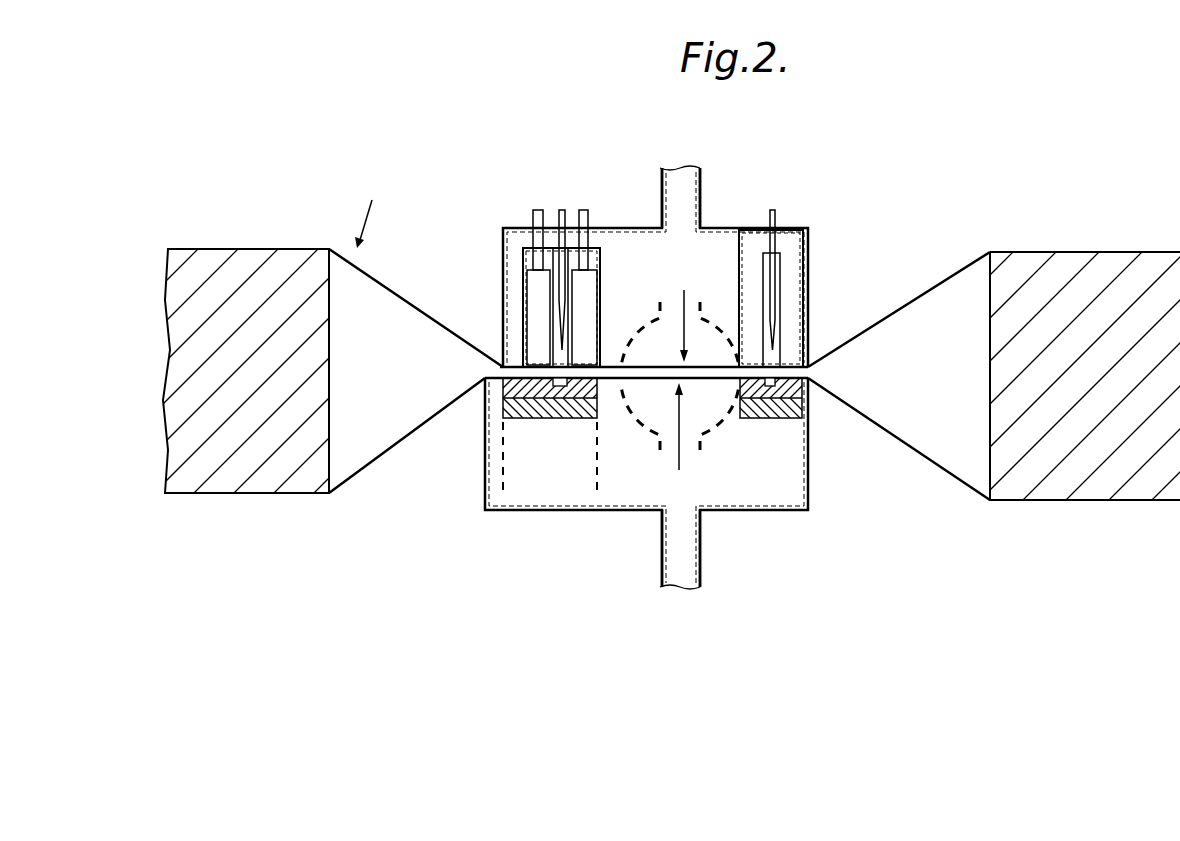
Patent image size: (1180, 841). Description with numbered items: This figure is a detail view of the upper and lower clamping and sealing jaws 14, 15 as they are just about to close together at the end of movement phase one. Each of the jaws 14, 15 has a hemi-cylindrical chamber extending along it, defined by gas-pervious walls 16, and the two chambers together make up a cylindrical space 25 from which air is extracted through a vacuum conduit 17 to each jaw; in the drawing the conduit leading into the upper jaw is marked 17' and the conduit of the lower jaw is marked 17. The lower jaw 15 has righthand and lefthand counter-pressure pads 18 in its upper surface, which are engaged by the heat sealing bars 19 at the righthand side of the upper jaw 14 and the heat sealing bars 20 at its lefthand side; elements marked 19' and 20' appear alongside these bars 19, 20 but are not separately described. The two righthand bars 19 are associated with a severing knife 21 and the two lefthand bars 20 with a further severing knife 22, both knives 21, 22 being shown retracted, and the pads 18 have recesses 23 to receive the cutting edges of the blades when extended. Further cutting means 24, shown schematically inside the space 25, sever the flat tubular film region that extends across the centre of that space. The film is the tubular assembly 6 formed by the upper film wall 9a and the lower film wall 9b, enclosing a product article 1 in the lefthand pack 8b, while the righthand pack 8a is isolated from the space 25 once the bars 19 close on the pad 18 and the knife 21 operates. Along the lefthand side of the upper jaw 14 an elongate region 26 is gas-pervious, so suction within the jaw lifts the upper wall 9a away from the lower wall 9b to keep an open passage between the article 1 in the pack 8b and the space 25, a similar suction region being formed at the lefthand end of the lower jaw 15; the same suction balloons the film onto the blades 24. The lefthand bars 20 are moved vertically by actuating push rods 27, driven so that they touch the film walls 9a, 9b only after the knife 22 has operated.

The product article 1 is at (291, 278).
The tubular assembly 6 is at (368, 210).
The righthand pack 8a is at (1046, 272).
The lefthand pack 8b is at (229, 248).
The upper film wall 9a is at (398, 293).
The lower film wall 9b is at (399, 447).
The upper clamping and sealing jaw 14 is at (810, 238).
The lower clamping and sealing jaw 15 is at (810, 500).
The gas-pervious walls 16 is at (632, 318).
The vacuum conduit 17 is at (700, 549).
The inlet pipe 17' is at (705, 197).
The counter-pressure pads 18 is at (503, 398).
The heat sealing bars 19 is at (798, 298).
The insulating sleeve 19' is at (815, 310).
The heat sealing bars 20 is at (526, 307).
The holder wall 20' is at (613, 263).
The severing knife 21 is at (775, 215).
The further severing knife 22 is at (560, 215).
The recesses 23 is at (565, 390).
The further cutting means 24 is at (684, 290).
The cylindrical space 25 is at (703, 343).
The elongate region 26 is at (533, 357).
The actuating push rods 27 is at (537, 218).